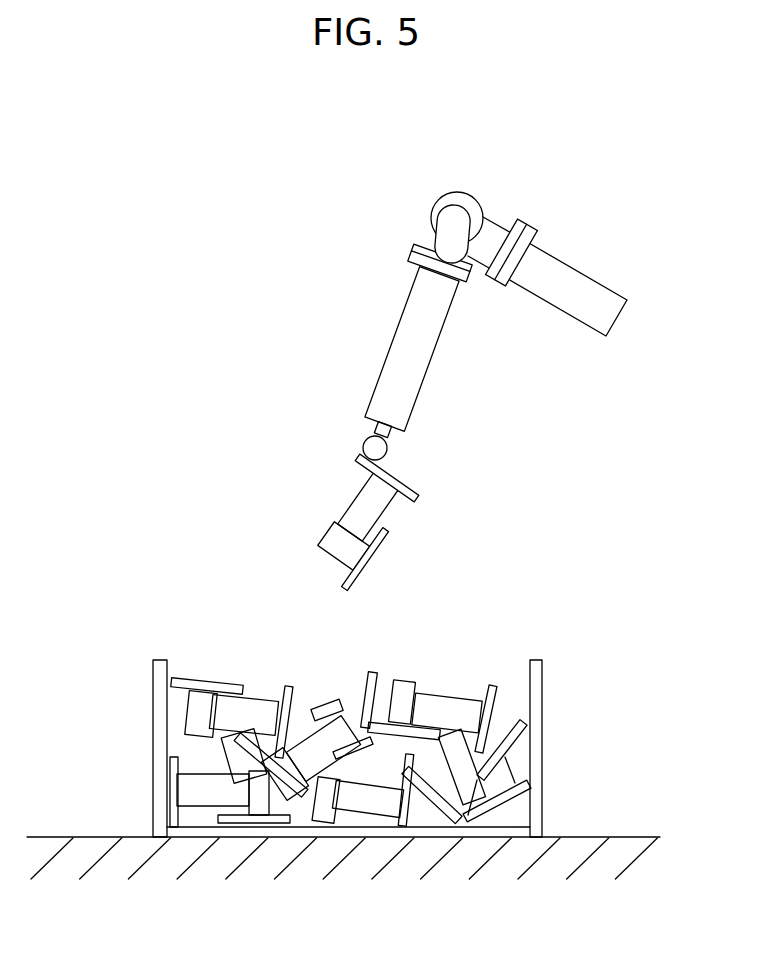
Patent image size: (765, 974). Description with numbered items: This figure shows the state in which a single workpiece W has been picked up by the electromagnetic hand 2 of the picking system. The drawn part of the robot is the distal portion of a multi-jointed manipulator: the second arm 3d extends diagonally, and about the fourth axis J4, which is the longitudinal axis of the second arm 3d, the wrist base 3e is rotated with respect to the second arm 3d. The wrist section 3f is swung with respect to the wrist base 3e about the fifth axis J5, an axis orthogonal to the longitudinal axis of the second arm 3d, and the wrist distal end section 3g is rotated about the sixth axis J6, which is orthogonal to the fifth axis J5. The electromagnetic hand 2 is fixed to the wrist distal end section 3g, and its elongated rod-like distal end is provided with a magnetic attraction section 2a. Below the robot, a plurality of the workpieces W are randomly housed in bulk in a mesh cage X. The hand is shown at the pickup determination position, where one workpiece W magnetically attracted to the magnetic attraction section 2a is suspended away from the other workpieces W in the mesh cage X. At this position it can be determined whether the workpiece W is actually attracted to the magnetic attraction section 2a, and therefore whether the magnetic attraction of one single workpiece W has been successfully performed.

The electromagnetic hand 2 is at (433, 355).
The magnetic attraction section 2a is at (362, 443).
The second arm 3d is at (573, 265).
The wrist base 3e is at (490, 223).
The wrist section 3f is at (434, 237).
The wrist distal end section 3g is at (415, 258).
The fourth axis J4 is at (546, 208).
The fifth axis J5 is at (433, 186).
The sixth axis J6 is at (482, 299).
The workpiece W is at (352, 500).
The mesh cage X is at (545, 712).